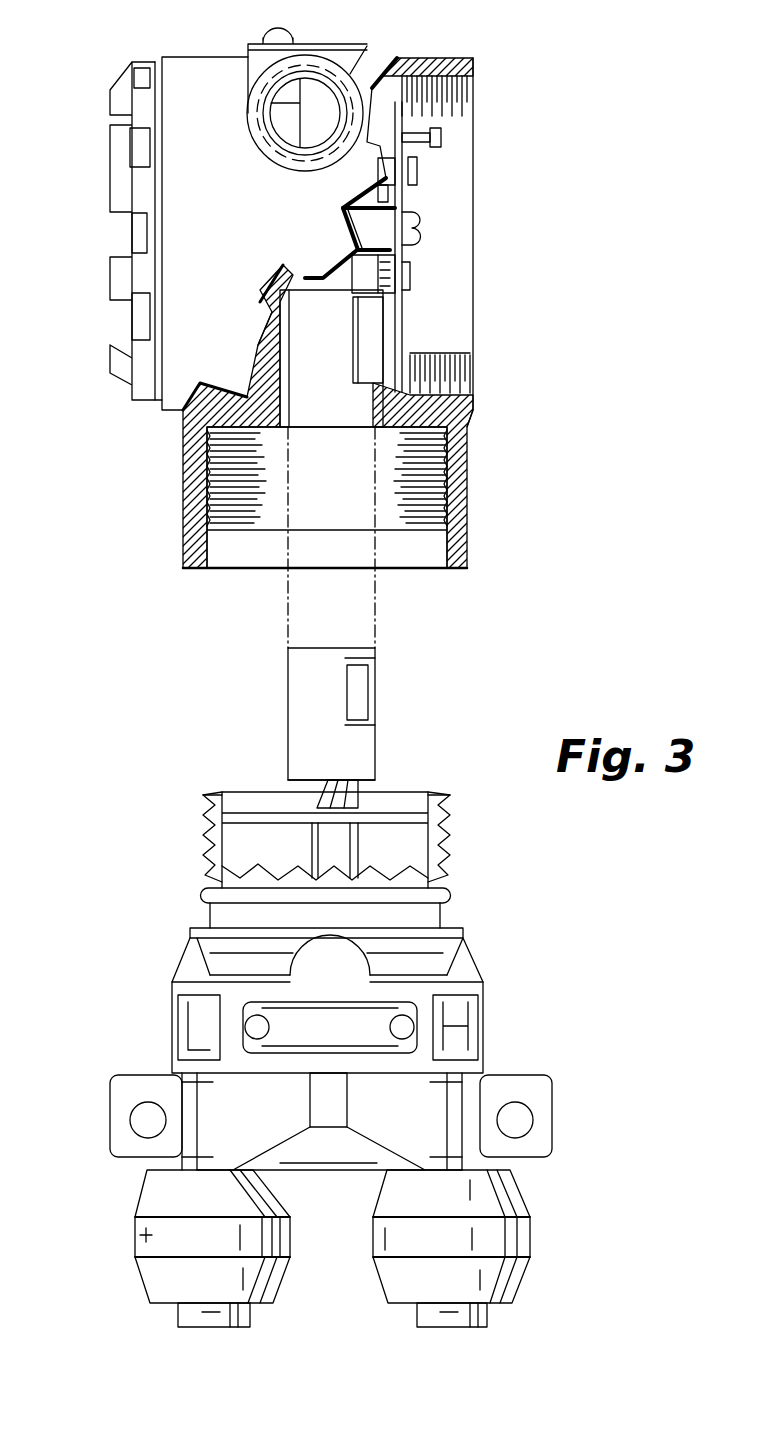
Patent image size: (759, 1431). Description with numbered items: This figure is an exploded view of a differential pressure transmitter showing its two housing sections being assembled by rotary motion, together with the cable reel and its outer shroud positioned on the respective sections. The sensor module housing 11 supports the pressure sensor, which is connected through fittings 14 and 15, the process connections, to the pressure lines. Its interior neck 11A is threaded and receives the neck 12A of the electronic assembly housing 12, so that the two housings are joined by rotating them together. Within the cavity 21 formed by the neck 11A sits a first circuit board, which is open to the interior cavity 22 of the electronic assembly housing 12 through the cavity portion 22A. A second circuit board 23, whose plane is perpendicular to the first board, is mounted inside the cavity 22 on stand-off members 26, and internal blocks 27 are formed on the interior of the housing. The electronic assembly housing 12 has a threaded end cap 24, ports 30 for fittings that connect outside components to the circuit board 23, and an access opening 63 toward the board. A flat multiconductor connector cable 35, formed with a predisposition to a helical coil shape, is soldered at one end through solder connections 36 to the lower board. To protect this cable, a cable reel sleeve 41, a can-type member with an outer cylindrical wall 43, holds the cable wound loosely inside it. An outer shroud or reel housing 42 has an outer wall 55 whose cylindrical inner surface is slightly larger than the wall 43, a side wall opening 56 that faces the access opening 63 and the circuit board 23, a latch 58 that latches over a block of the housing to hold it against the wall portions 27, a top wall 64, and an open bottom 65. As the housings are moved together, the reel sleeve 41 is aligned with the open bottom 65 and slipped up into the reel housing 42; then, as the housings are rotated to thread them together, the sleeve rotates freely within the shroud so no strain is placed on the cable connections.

The sensor module housing 11 is at (487, 993).
The interior neck 11A is at (207, 847).
The electronic assembly housing 12 is at (413, 57).
The neck 12A is at (467, 490).
The fitting 14 is at (137, 1233).
The fitting 15 is at (532, 1232).
The cavity 21 is at (397, 837).
The interior cavity 22 is at (397, 258).
The cavity portion 22A is at (443, 440).
The second circuit board 23 is at (400, 188).
The threaded end cap 24 is at (138, 57).
The stand-off members 26 is at (370, 220).
The internal blocks 27 is at (273, 313).
The ports 30 is at (313, 103).
The printed circuit board connector cable 35 is at (340, 780).
The solder connections 36 is at (313, 808).
The cable reel sleeve 41 is at (285, 664).
The reel housing 42 is at (322, 318).
The outer cylindrical wall 43 is at (305, 708).
The outer wall 55 is at (267, 357).
The side wall opening 56 is at (367, 320).
The latch 58 is at (420, 350).
The access opening 63 is at (457, 123).
The top wall 64 is at (343, 250).
The open bottom 65 is at (318, 408).